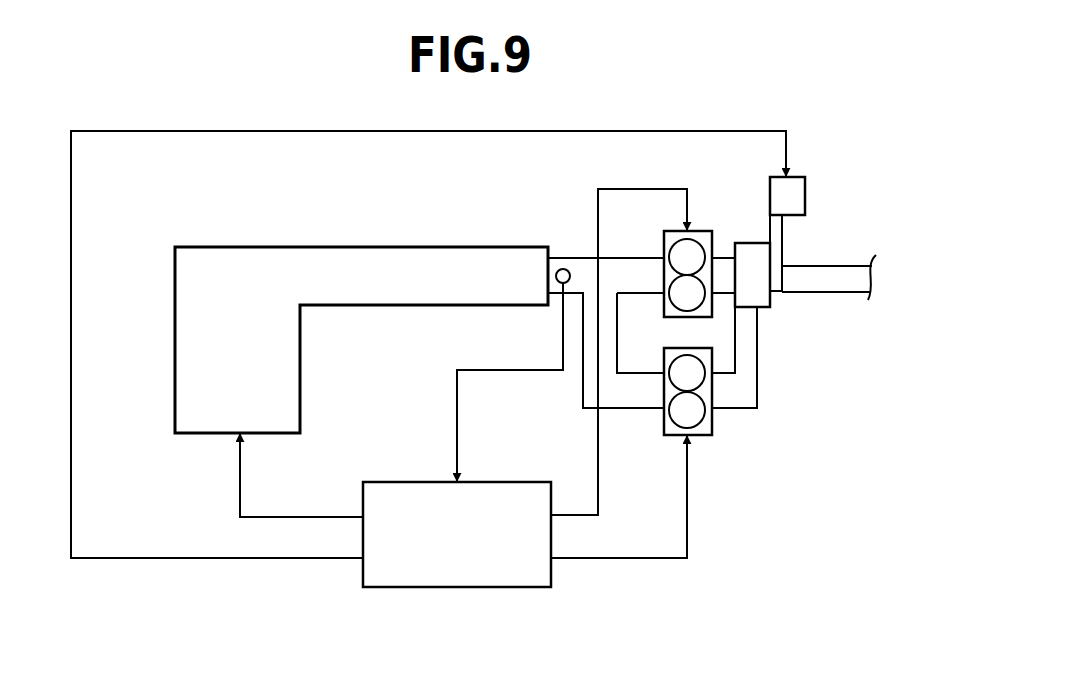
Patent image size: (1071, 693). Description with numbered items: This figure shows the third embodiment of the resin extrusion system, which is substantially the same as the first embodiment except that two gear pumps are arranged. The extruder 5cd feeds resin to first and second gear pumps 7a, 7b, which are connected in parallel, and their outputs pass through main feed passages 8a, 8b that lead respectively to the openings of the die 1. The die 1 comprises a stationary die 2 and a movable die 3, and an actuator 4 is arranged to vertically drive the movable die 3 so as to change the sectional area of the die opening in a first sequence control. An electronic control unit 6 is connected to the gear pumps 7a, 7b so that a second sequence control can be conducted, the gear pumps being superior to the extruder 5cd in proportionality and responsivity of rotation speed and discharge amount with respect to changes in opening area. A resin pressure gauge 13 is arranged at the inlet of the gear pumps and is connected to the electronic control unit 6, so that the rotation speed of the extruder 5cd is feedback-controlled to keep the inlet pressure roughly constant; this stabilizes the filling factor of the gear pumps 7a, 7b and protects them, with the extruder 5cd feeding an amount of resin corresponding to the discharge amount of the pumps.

The die 1 is at (805, 313).
The stationary die 2 is at (755, 299).
The movable die 3 is at (773, 279).
The actuator 4 is at (805, 190).
The extruder 5cd is at (190, 333).
The electronic control unit 6 is at (465, 588).
The first gear pump 7a is at (716, 236).
The second gear pump 7b is at (712, 425).
The main feed passage 8a is at (718, 267).
The main feed passage 8b is at (737, 392).
The resin pressure gauge 13 is at (563, 268).